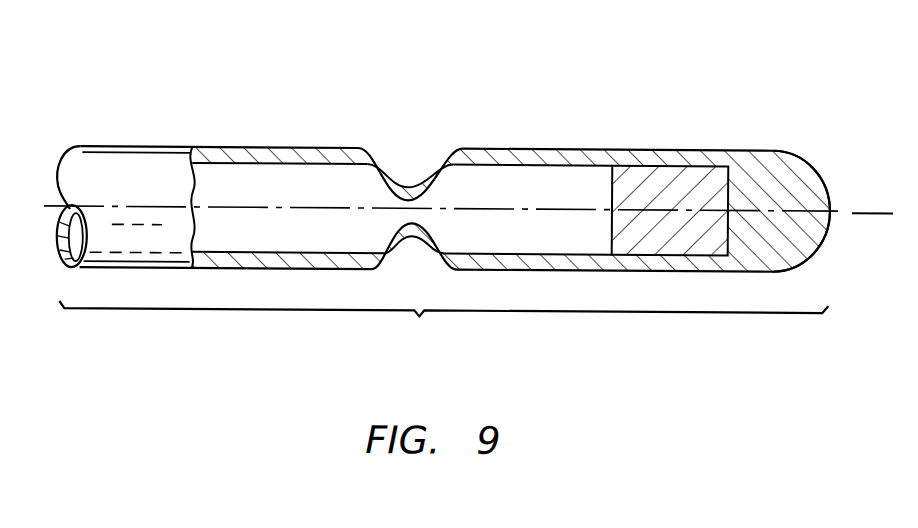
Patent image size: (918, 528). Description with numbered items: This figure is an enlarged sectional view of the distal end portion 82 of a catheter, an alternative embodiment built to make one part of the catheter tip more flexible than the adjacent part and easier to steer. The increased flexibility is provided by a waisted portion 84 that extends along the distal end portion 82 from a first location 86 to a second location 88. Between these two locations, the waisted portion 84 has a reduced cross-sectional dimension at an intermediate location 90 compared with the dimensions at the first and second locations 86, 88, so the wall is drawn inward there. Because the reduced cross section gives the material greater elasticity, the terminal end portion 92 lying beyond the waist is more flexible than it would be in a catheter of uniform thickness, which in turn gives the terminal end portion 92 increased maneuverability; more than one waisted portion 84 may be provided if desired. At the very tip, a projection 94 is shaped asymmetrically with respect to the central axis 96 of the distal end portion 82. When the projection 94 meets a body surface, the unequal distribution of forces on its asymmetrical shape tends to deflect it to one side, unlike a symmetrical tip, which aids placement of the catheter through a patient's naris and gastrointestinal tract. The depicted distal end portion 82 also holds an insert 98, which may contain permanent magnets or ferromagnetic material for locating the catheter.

The distal end portion 82 is at (440, 249).
The waisted portion 84 is at (423, 158).
The first location 86 is at (358, 146).
The second location 88 is at (447, 146).
The intermediate location 90 is at (403, 152).
The terminal end portion 92 is at (742, 146).
The projection 94 is at (801, 168).
The central axis 96 is at (868, 207).
The insert 98 is at (640, 168).